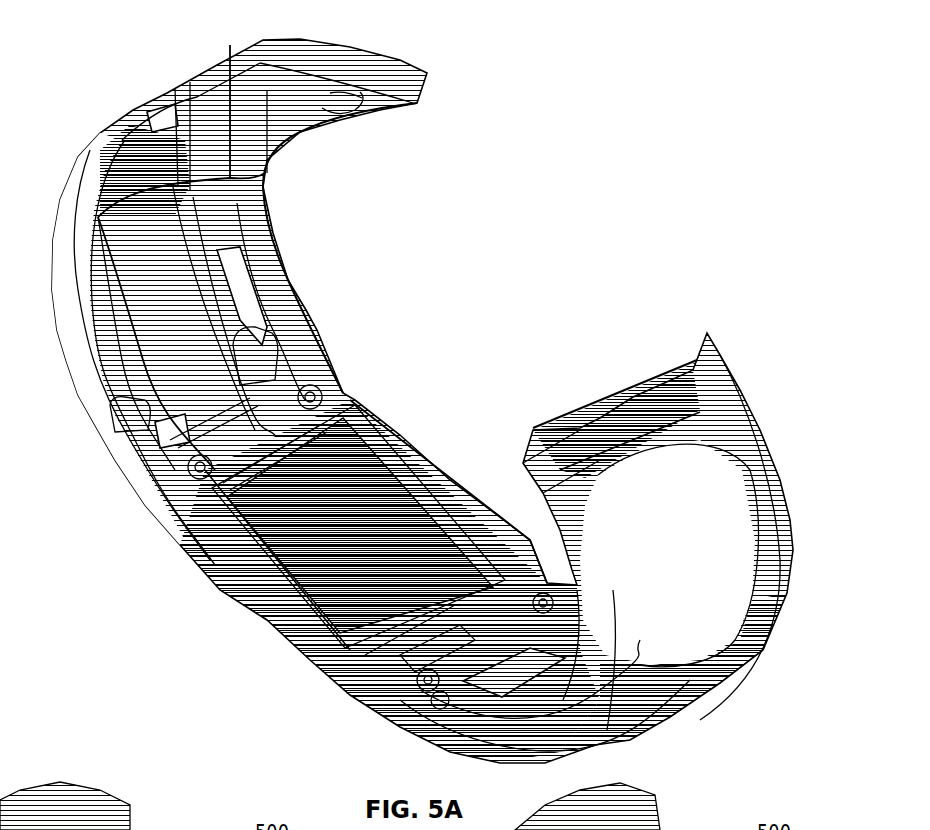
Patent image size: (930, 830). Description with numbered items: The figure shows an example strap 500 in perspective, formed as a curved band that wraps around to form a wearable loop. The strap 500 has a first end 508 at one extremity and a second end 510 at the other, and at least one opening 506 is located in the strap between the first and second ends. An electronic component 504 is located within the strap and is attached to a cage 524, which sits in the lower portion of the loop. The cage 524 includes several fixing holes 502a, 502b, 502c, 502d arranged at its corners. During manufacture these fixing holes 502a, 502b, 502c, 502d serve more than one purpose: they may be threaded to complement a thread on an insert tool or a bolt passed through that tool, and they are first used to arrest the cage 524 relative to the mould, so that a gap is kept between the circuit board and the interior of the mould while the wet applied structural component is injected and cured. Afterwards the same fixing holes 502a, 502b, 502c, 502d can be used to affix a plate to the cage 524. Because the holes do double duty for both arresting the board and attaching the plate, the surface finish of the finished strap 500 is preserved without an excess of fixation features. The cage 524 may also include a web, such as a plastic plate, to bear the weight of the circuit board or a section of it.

The strap 500 is at (414, 396).
The fixing hole 502a is at (540, 597).
The fixing hole 502b is at (198, 470).
The fixing hole 502c is at (312, 402).
The fixing hole 502d is at (422, 678).
The electronic component 504 is at (323, 607).
The opening 506 is at (222, 418).
The first end 508 is at (322, 108).
The second end 510 is at (637, 417).
The cage 524 is at (487, 637).